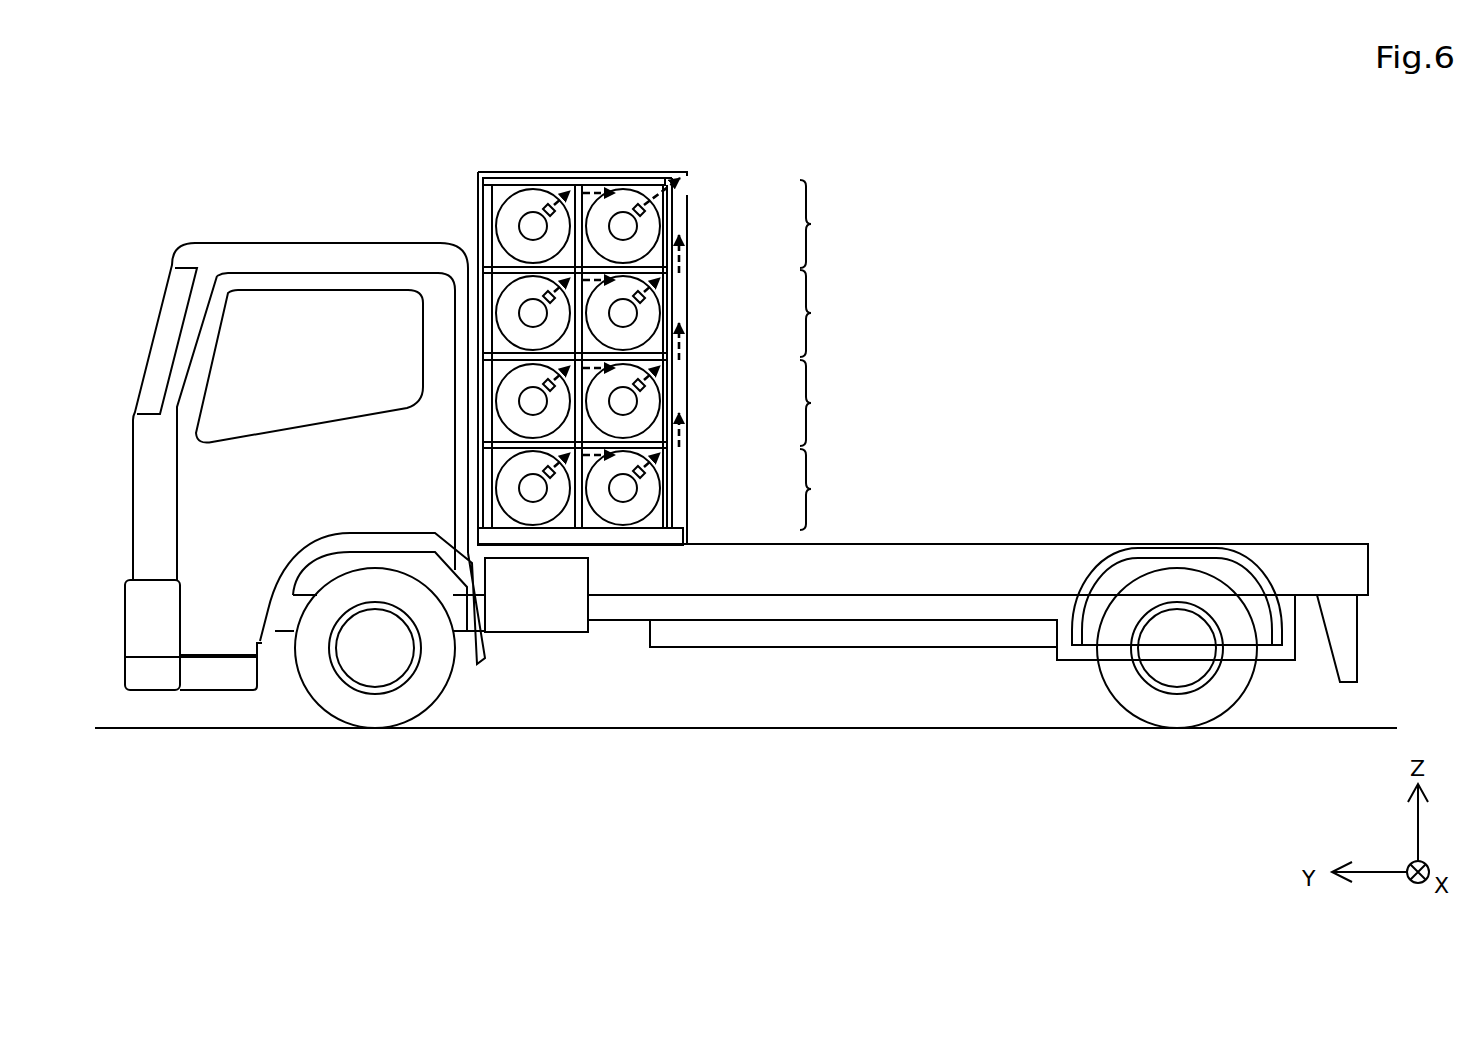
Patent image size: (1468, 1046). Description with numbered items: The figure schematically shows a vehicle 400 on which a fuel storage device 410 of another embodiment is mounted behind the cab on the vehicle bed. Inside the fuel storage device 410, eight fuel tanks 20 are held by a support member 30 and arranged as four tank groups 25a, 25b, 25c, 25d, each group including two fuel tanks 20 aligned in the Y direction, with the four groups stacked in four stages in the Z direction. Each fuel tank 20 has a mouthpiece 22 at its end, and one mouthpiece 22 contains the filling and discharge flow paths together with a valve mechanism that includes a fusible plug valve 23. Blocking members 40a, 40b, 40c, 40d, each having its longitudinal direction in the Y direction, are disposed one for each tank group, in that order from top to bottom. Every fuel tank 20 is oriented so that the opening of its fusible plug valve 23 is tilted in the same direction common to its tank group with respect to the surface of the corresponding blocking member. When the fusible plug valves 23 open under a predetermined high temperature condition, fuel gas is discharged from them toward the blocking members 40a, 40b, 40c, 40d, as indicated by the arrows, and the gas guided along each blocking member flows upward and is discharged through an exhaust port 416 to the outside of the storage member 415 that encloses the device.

The vehicle 400 is at (167, 208).
The fuel storage device 410 is at (568, 351).
The fuel tank 20 is at (622, 309).
The mouthpiece 22 is at (624, 320).
The fusible plug valve 23 is at (638, 308).
The support member 30 is at (645, 190).
The blocking member 40a is at (658, 163).
The blocking member 40b is at (656, 292).
The blocking member 40c is at (652, 378).
The blocking member 40d is at (652, 468).
The storage member 415 is at (688, 232).
The exhaust port 416 is at (688, 184).
The tank group 25a is at (830, 224).
The tank group 25b is at (830, 313).
The tank group 25c is at (830, 403).
The tank group 25d is at (830, 489).